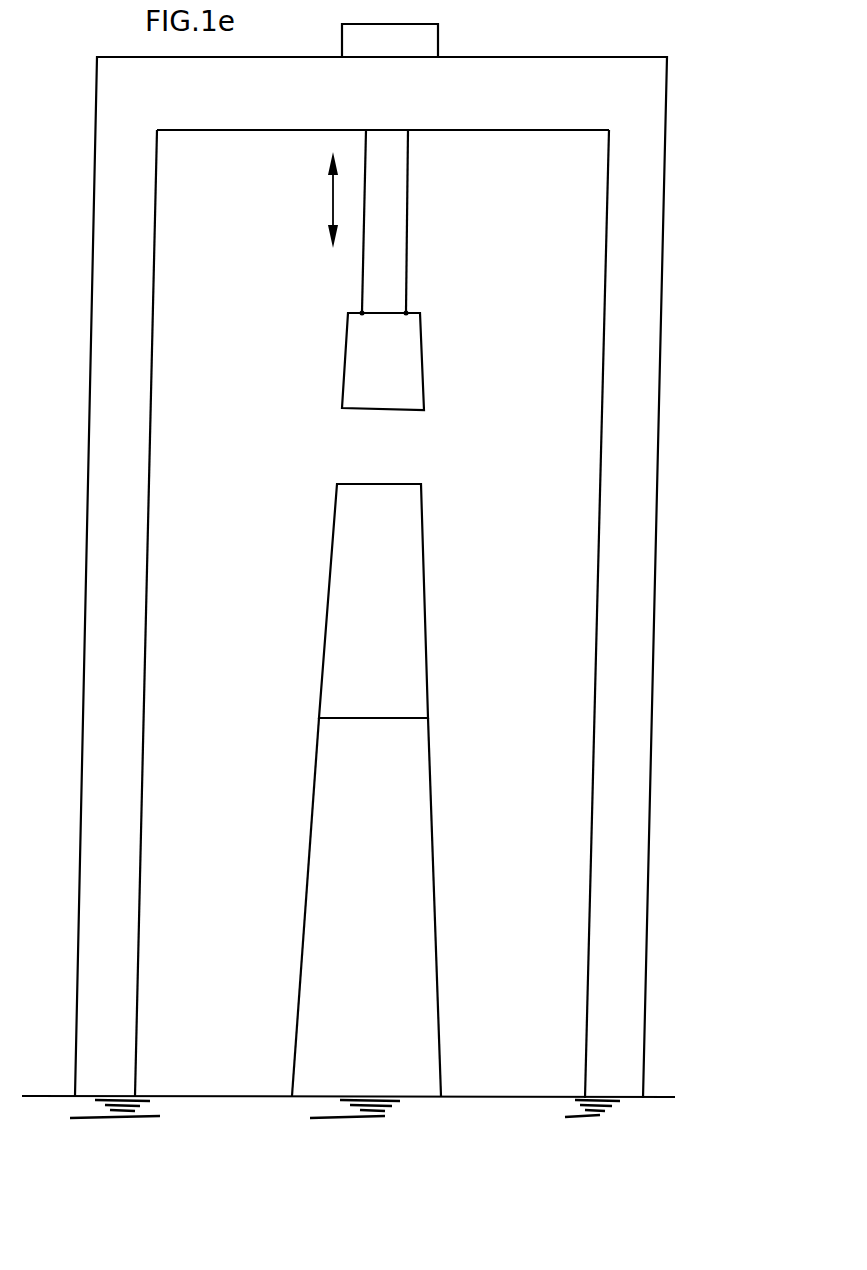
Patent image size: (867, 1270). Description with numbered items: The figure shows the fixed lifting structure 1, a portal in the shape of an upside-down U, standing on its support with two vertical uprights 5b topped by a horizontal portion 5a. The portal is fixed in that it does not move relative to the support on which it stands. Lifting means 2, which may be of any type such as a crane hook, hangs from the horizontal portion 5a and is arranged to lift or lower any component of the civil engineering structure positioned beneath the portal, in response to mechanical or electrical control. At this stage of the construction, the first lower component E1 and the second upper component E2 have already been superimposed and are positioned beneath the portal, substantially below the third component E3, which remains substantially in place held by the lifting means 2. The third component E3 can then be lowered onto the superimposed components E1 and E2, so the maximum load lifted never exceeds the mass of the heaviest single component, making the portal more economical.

The fixed lifting structure 1 is at (668, 377).
The horizontal portion 5a is at (503, 84).
The vertical uprights 5b is at (128, 451).
The lifting means 2 is at (413, 208).
The third component E3 is at (398, 355).
The second upper component E2 is at (395, 529).
The first lower component E1 is at (405, 884).